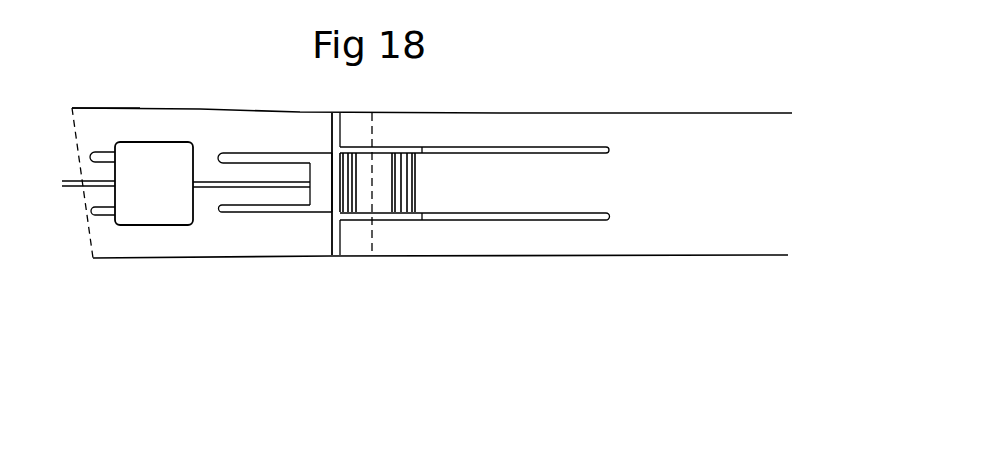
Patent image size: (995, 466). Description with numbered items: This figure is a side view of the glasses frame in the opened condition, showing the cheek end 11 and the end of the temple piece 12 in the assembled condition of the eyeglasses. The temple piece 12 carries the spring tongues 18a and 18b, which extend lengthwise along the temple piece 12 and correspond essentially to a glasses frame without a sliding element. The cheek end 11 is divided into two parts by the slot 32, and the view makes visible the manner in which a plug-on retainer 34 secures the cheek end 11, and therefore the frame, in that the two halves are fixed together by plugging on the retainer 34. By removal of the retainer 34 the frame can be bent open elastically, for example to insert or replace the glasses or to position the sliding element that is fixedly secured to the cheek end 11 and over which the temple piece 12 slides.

The cheek end 11 is at (132, 117).
The temple piece 12 is at (665, 143).
The spring tongue 18a is at (482, 232).
The spring tongue 18b is at (483, 130).
The slot 32 is at (203, 188).
The plug-on retainer 34 is at (155, 208).